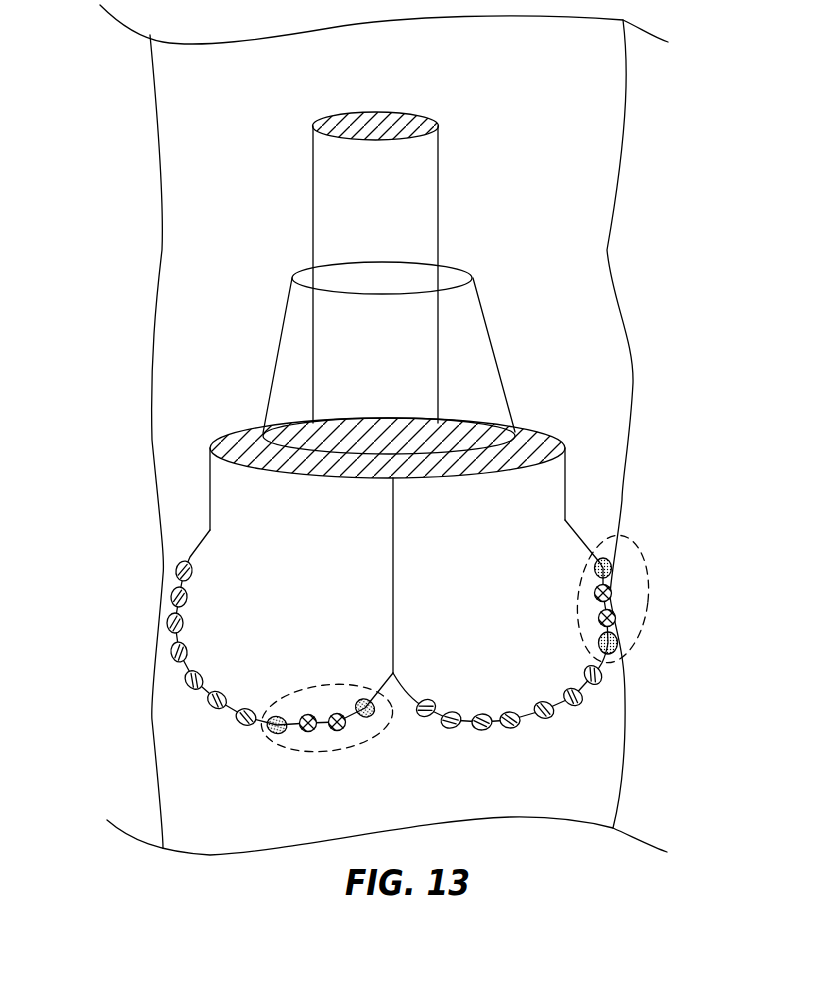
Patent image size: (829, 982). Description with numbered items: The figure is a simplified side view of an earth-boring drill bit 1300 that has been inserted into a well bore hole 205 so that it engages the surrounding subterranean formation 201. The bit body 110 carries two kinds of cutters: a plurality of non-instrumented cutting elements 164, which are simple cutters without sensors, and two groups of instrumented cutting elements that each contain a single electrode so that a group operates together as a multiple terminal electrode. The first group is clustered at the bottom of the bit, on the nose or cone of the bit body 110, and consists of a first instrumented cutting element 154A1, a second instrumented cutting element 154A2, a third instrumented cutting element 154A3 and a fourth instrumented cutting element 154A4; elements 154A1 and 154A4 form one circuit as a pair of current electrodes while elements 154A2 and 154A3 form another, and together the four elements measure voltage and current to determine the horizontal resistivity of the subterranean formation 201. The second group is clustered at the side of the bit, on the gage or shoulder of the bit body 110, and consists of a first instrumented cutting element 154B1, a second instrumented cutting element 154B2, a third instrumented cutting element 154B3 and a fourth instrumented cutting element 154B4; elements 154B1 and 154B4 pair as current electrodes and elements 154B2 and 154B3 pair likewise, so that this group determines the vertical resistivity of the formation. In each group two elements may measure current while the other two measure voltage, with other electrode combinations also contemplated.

The subterranean formation 201 is at (84, 232).
The well bore hole 205 is at (513, 178).
The earth-boring drill bit 1300 is at (237, 298).
The bit body 110 is at (222, 562).
The non-instrumented cutting elements 164 is at (113, 607).
The first instrumented cutting element 154A1 is at (274, 734).
The second instrumented cutting element 154A2 is at (308, 732).
The third instrumented cutting element 154A3 is at (338, 731).
The fourth instrumented cutting element 154A4 is at (369, 718).
The first instrumented cutting element 154B1 is at (612, 566).
The second instrumented cutting element 154B2 is at (612, 593).
The third instrumented cutting element 154B3 is at (616, 618).
The fourth instrumented cutting element 154B4 is at (619, 643).